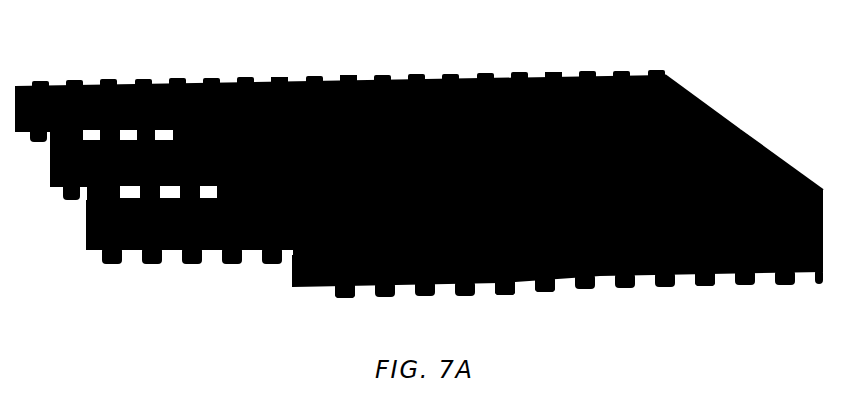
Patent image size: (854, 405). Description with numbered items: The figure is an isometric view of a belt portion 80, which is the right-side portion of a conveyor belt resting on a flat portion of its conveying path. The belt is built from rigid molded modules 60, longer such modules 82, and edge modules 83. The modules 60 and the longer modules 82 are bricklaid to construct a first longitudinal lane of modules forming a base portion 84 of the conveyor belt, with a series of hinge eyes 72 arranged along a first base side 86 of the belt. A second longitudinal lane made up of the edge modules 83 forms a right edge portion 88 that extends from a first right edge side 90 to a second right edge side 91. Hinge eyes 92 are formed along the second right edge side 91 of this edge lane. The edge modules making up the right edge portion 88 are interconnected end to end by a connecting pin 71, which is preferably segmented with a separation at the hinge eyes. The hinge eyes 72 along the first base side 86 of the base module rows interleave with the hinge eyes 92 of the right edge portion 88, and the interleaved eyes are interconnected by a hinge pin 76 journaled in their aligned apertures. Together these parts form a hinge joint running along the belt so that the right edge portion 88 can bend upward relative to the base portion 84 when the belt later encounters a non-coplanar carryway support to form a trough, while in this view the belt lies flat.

The belt portion 80 is at (425, 48).
The base portion 84 is at (263, 85).
The hinge eyes 72 is at (342, 83).
The second right edge side 91 is at (355, 85).
The right edge portion 88 is at (553, 77).
The edge modules 83 is at (700, 100).
The first right edge side 90 is at (743, 134).
The longer modules 82 is at (88, 217).
The module 60 is at (293, 263).
The connecting pin 71 is at (320, 287).
The first base side 86 is at (497, 285).
The hinge pin 76 is at (510, 288).
The hinge eyes 92 is at (537, 287).